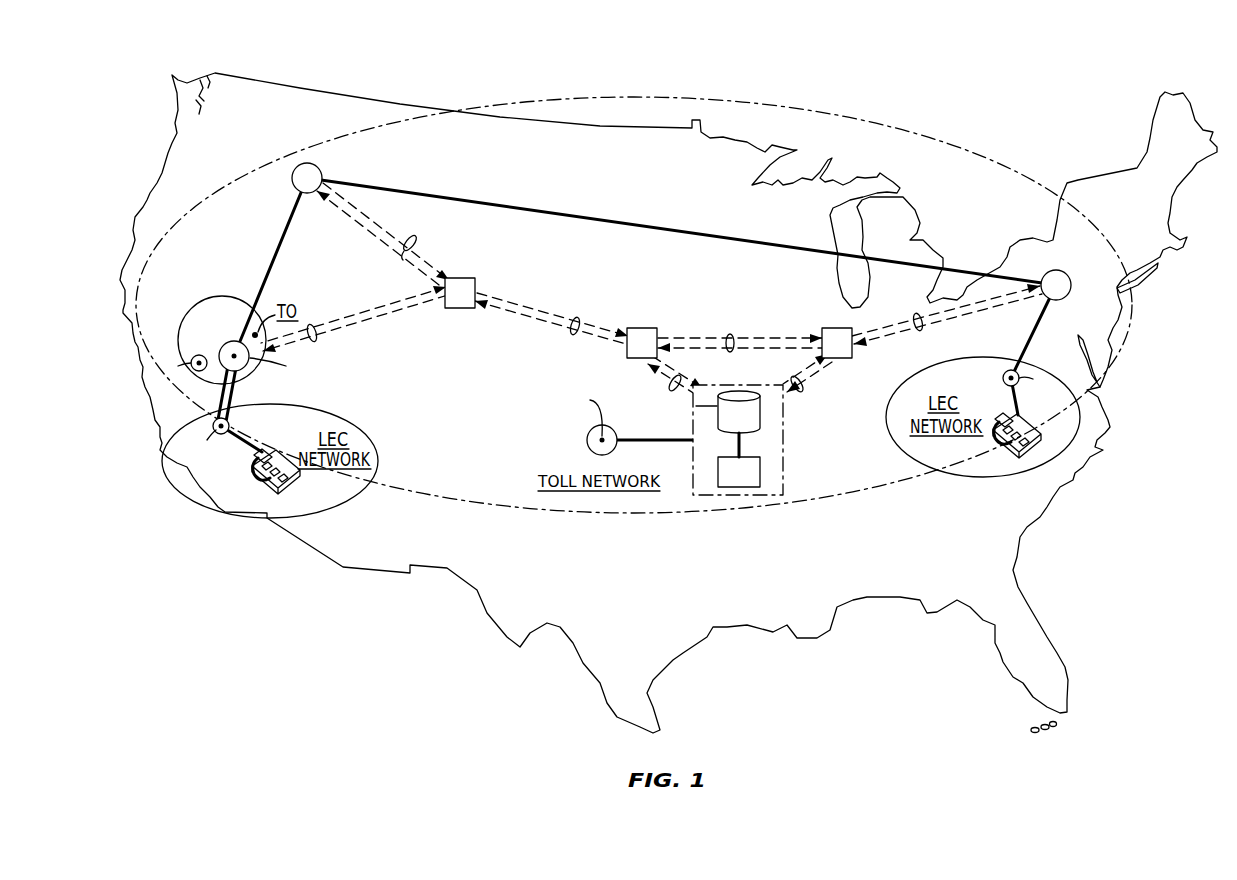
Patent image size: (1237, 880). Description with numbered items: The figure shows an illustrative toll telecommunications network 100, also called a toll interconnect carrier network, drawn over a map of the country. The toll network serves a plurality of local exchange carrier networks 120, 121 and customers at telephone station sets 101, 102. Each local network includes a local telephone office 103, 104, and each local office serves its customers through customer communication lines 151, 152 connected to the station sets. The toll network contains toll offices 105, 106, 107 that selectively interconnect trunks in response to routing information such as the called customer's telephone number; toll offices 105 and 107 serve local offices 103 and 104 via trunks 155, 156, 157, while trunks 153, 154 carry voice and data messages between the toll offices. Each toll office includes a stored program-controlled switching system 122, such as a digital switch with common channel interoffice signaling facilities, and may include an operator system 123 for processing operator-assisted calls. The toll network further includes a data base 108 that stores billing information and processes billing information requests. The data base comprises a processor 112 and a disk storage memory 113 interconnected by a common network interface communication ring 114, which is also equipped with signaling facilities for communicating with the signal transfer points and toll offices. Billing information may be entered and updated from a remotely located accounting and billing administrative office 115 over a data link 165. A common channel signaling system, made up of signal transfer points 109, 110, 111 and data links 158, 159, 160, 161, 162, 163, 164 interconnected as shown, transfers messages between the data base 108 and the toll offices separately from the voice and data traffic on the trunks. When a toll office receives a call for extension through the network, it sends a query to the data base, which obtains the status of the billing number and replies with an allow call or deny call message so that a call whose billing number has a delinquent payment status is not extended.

The toll telecommunications network 100 is at (657, 512).
The telephone station set 101 is at (290, 478).
The telephone station set 102 is at (1000, 448).
The local telephone office 103 is at (230, 425).
The local telephone office 104 is at (1003, 378).
The toll office 105 is at (208, 300).
The toll office 106 is at (299, 164).
The toll office 107 is at (1062, 270).
The data base 108 is at (758, 440).
The signal transfer point 109 is at (460, 309).
The signal transfer point 110 is at (644, 327).
The signal transfer point 111 is at (836, 327).
The processor 112 is at (736, 455).
The disk storage memory 113 is at (762, 413).
The common network interface communication ring 114 is at (743, 450).
The accounting and billing administrative office 115 is at (590, 434).
The local exchange carrier network 120 is at (345, 500).
The local exchange carrier network 121 is at (997, 485).
The stored program-controlled switching system 122 is at (226, 342).
The operator system 123 is at (205, 350).
The customer communication line 151 is at (246, 446).
The customer communication line 152 is at (1018, 398).
The trunk 153 is at (270, 258).
The trunk 154 is at (655, 224).
The trunk 155 is at (216, 394).
The trunk 156 is at (236, 390).
The trunk 157 is at (1045, 312).
The CCIS data link 158 is at (574, 336).
The CCIS data link 159 is at (670, 391).
The CCIS data link 160 is at (730, 352).
The CCIS data link 161 is at (920, 332).
The CCIS data link 162 is at (803, 392).
The CCIS data link 163 is at (412, 236).
The CCIS data link 164 is at (313, 342).
The data link 165 is at (640, 440).